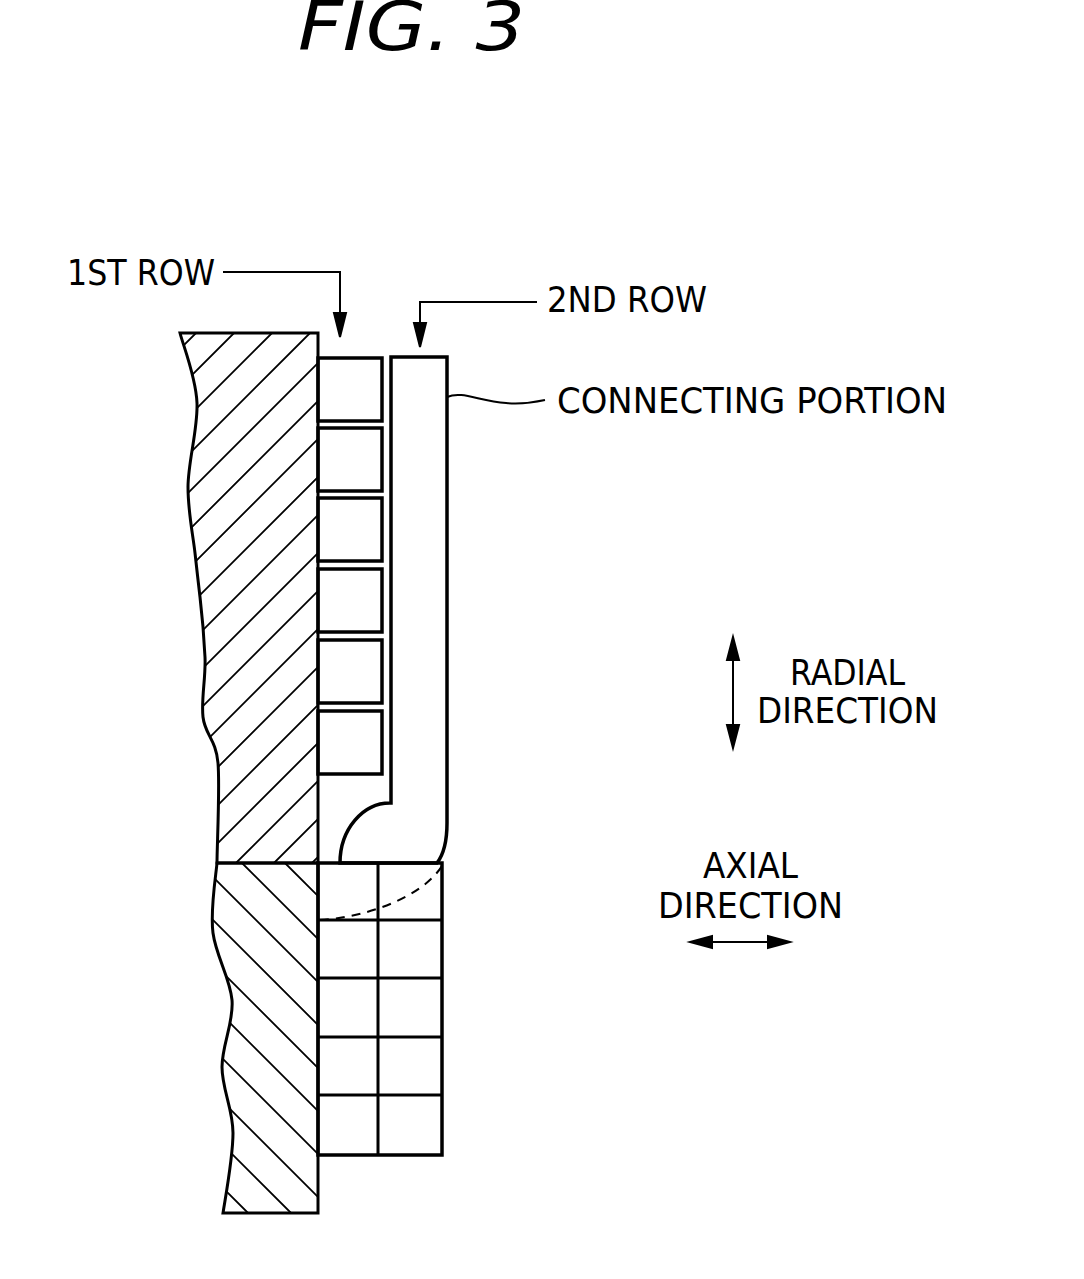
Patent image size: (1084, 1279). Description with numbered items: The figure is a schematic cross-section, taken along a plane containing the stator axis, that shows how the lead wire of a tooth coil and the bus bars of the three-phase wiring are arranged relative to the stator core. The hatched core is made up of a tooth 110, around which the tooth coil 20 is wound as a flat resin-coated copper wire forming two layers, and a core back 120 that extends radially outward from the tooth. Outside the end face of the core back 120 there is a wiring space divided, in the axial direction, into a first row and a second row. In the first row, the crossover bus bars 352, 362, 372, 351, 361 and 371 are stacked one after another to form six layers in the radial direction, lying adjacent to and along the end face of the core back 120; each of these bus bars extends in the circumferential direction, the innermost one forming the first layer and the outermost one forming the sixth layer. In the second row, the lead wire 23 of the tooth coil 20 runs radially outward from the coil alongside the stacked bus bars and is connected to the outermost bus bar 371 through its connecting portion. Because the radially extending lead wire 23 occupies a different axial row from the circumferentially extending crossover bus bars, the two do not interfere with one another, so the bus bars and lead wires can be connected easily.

The tooth coil 20 is at (480, 1021).
The lead wire 23 is at (422, 700).
The tooth 110 is at (260, 1070).
The core back 120 is at (225, 418).
The bus bar 351 is at (338, 530).
The bus bar 352 is at (338, 745).
The bus bar 361 is at (338, 460).
The bus bar 362 is at (338, 672).
The bus bar 371 is at (362, 358).
The bus bar 372 is at (338, 605).